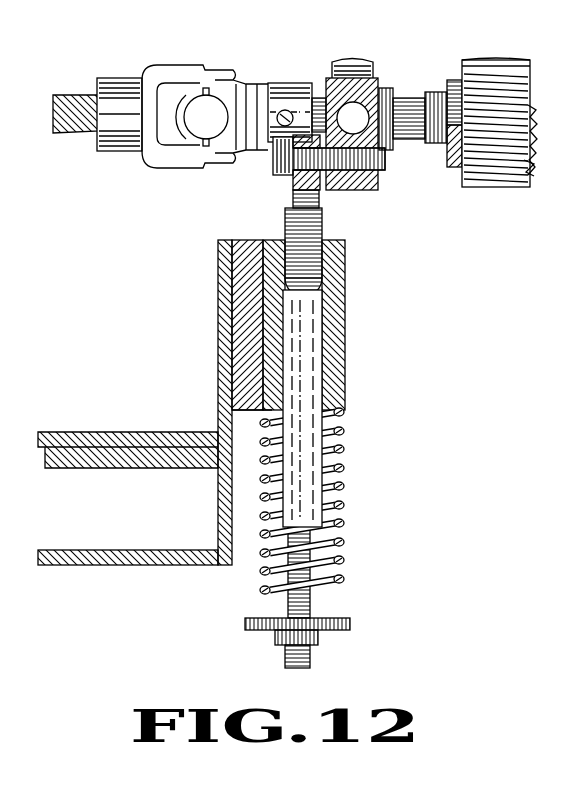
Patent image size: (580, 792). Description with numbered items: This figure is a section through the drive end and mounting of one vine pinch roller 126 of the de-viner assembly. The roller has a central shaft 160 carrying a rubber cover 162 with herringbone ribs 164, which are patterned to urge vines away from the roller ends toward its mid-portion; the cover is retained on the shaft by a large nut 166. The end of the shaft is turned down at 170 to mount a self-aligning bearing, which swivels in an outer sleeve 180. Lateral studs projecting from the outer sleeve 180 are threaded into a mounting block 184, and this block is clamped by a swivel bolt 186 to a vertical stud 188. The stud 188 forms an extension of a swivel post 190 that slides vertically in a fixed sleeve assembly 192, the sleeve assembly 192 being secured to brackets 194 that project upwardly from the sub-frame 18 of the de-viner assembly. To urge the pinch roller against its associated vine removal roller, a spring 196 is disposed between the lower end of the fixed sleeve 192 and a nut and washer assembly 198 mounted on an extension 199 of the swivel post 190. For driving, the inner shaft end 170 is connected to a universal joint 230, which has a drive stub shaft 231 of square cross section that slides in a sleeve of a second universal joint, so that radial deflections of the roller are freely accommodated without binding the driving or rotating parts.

The sub-frame 18 is at (135, 564).
The vine pinch roller 126 is at (468, 60).
The central shaft 160 is at (533, 148).
The rubber cover 162 is at (528, 172).
The herringbone rib 164 is at (508, 74).
The large nut 166 is at (452, 168).
The turned-down shaft end 170 is at (407, 96).
The outer sleeve 180 is at (355, 62).
The mounting block 184 is at (372, 186).
The swivel bolt 186 is at (277, 158).
The vertical stud 188 is at (292, 200).
The swivel post 190 is at (345, 295).
The fixed sleeve assembly 192 is at (343, 328).
The bracket 194 is at (222, 365).
The spring 196 is at (338, 507).
The nut and washer assembly 198 is at (302, 643).
The extension 199 is at (300, 557).
The universal joint 230 is at (167, 70).
The drive stub shaft 231 is at (75, 98).